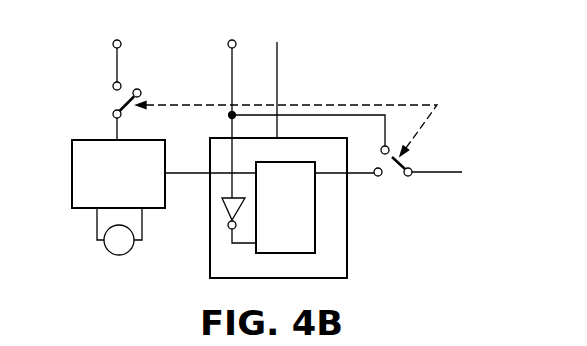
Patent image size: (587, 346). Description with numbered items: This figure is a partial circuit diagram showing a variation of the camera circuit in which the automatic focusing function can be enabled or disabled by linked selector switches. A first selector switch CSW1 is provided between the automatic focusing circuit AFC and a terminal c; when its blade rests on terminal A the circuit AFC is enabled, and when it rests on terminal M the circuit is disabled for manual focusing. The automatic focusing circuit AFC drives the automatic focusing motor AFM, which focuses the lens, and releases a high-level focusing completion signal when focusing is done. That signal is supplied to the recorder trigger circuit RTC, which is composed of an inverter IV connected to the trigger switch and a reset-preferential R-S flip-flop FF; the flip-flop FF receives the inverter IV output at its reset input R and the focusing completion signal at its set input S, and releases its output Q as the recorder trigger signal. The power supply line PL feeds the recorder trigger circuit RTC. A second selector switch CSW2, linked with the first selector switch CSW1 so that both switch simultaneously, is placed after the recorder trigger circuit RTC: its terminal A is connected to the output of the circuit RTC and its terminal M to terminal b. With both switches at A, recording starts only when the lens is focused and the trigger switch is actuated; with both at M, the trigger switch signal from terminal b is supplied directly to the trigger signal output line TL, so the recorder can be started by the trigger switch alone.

The first selector switch CSW1 is at (123, 102).
The second selector switch CSW2 is at (397, 166).
The terminal c is at (130, 42).
The terminal b is at (239, 113).
The power supply line PL is at (276, 78).
The automatic focusing circuit AFC is at (140, 178).
The automatic focusing motor AFM is at (106, 251).
The recorder trigger circuit RTC is at (347, 230).
The reset-preferential R-S flip-flop FF is at (297, 213).
The inverter IV is at (229, 213).
The trigger signal output line TL is at (450, 173).